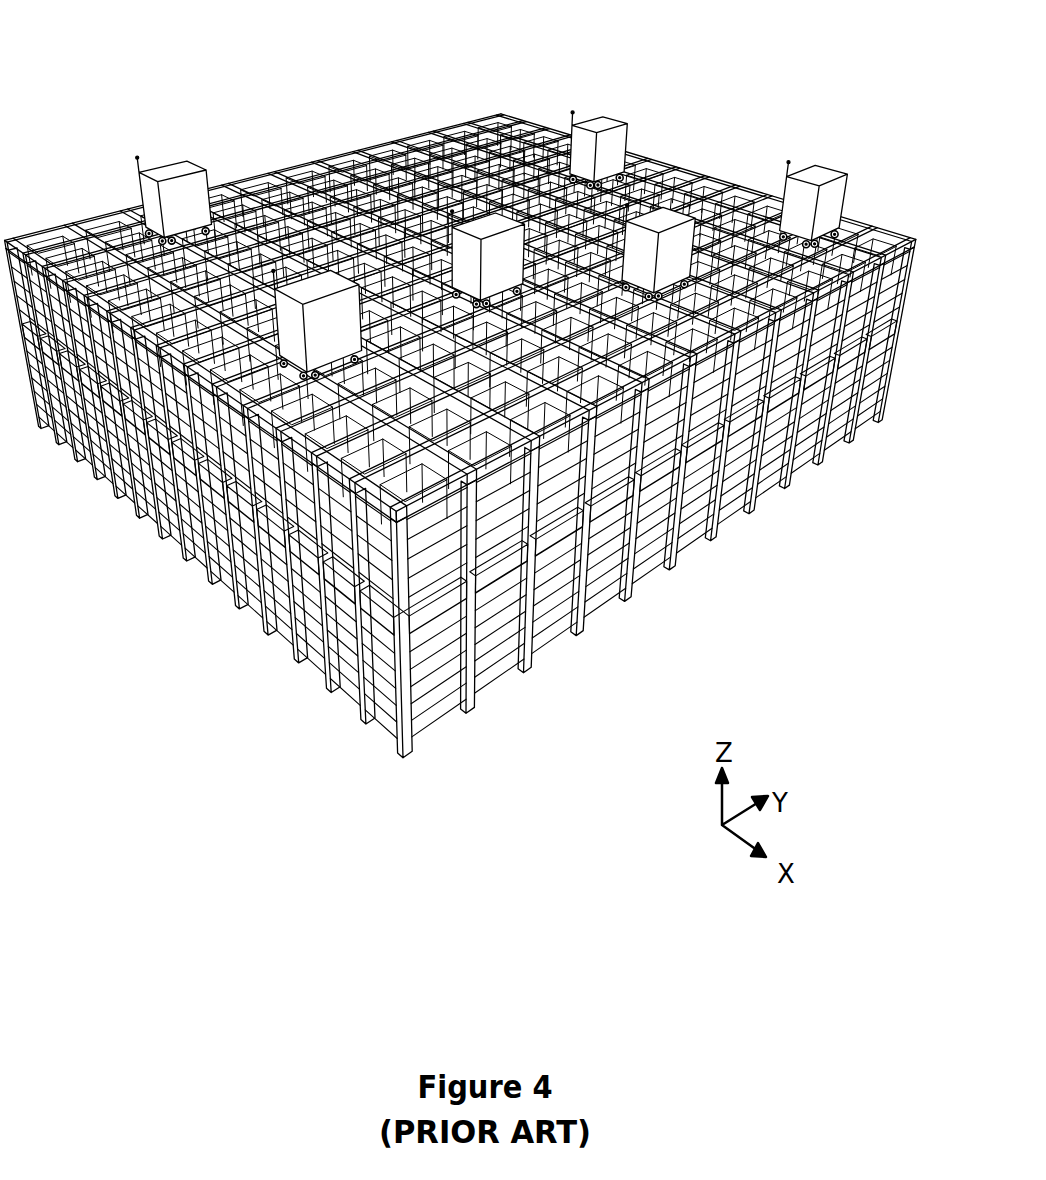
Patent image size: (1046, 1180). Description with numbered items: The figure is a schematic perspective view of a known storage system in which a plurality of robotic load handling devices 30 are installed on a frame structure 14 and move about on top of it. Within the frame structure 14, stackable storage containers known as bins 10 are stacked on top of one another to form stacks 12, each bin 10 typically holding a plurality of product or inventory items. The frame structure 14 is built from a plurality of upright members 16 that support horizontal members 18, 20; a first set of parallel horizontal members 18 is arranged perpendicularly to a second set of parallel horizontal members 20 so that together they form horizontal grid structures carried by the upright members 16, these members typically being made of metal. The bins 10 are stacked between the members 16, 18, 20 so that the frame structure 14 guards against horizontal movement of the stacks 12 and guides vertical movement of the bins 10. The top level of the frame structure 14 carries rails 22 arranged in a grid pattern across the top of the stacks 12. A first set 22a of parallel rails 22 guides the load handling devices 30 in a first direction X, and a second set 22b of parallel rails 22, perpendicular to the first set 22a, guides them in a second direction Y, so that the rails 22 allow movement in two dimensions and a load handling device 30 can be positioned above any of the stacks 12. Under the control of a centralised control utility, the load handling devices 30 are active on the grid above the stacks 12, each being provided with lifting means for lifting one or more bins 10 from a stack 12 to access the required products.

The bins 10 is at (464, 433).
The stacks 12 is at (826, 457).
The frame structure 14 is at (465, 425).
The upright members 16 is at (323, 633).
The first set of parallel horizontal members 18 is at (555, 545).
The second set of parallel horizontal members 20 is at (460, 321).
The rails 22 is at (460, 284).
The first set of parallel rails 22a is at (242, 364).
The second set of parallel rails 22b is at (320, 215).
The robotic load handling devices 30 is at (618, 142).